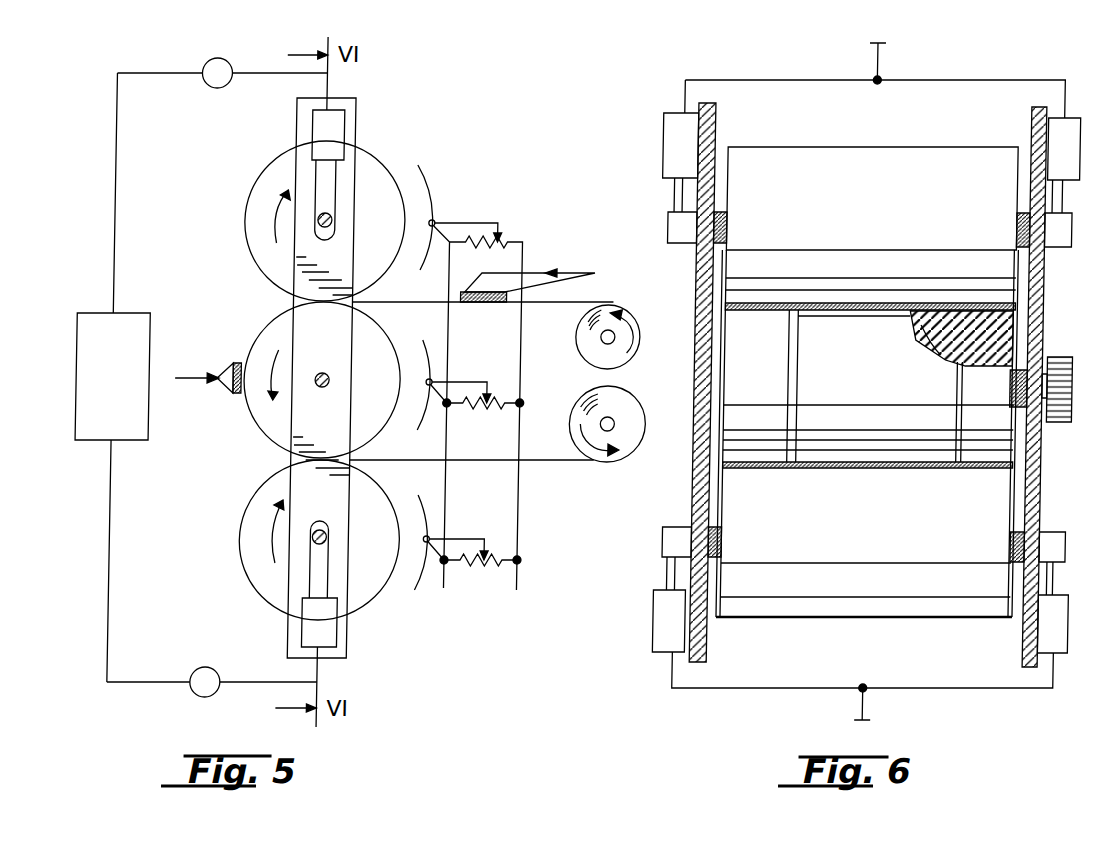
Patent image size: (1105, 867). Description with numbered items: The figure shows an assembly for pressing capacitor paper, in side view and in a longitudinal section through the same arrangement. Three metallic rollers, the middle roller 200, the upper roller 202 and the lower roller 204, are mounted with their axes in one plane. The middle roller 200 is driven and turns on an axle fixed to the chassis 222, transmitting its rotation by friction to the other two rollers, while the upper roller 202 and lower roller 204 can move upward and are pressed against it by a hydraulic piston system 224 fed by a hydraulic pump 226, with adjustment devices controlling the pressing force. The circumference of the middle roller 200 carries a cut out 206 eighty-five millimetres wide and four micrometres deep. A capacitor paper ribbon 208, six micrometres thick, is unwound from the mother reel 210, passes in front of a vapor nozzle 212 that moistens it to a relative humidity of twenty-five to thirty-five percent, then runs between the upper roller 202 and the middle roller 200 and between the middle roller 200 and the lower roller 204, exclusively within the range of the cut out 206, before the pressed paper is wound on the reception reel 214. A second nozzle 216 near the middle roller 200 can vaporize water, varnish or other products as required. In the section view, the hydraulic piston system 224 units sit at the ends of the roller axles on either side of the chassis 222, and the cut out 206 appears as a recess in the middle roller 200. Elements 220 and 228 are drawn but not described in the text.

In FIG. 5, the middle roller 200 is at (368, 350).
In FIG. 6, the middle roller 200 is at (744, 348).
In FIG. 5, the upper roller 202 is at (374, 170).
In FIG. 6, the upper roller 202 is at (882, 168).
In FIG. 5, the lower roller 204 is at (373, 590).
In FIG. 6, the lower roller 204 is at (857, 598).
In FIG. 6, the cut out 206 is at (896, 382).
In FIG. 5, the capacitor paper ribbon 208 is at (547, 305).
In FIG. 5, the mother reel 210 is at (623, 333).
In FIG. 5, the vapor nozzle 212 is at (480, 292).
In FIG. 5, the reception reel 214 is at (613, 461).
In FIG. 5, the second nozzle 216 is at (231, 370).
In FIG. 5, the corona electrode 220 is at (436, 220).
In FIG. 5, the chassis 222 is at (307, 490).
In FIG. 6, the chassis 222 is at (1038, 110).
In FIG. 6, the hydraulic piston system 224 is at (680, 142).
In FIG. 5, the hydraulic pump 226 is at (132, 338).
In FIG. 5, the terminal 228 is at (223, 80).